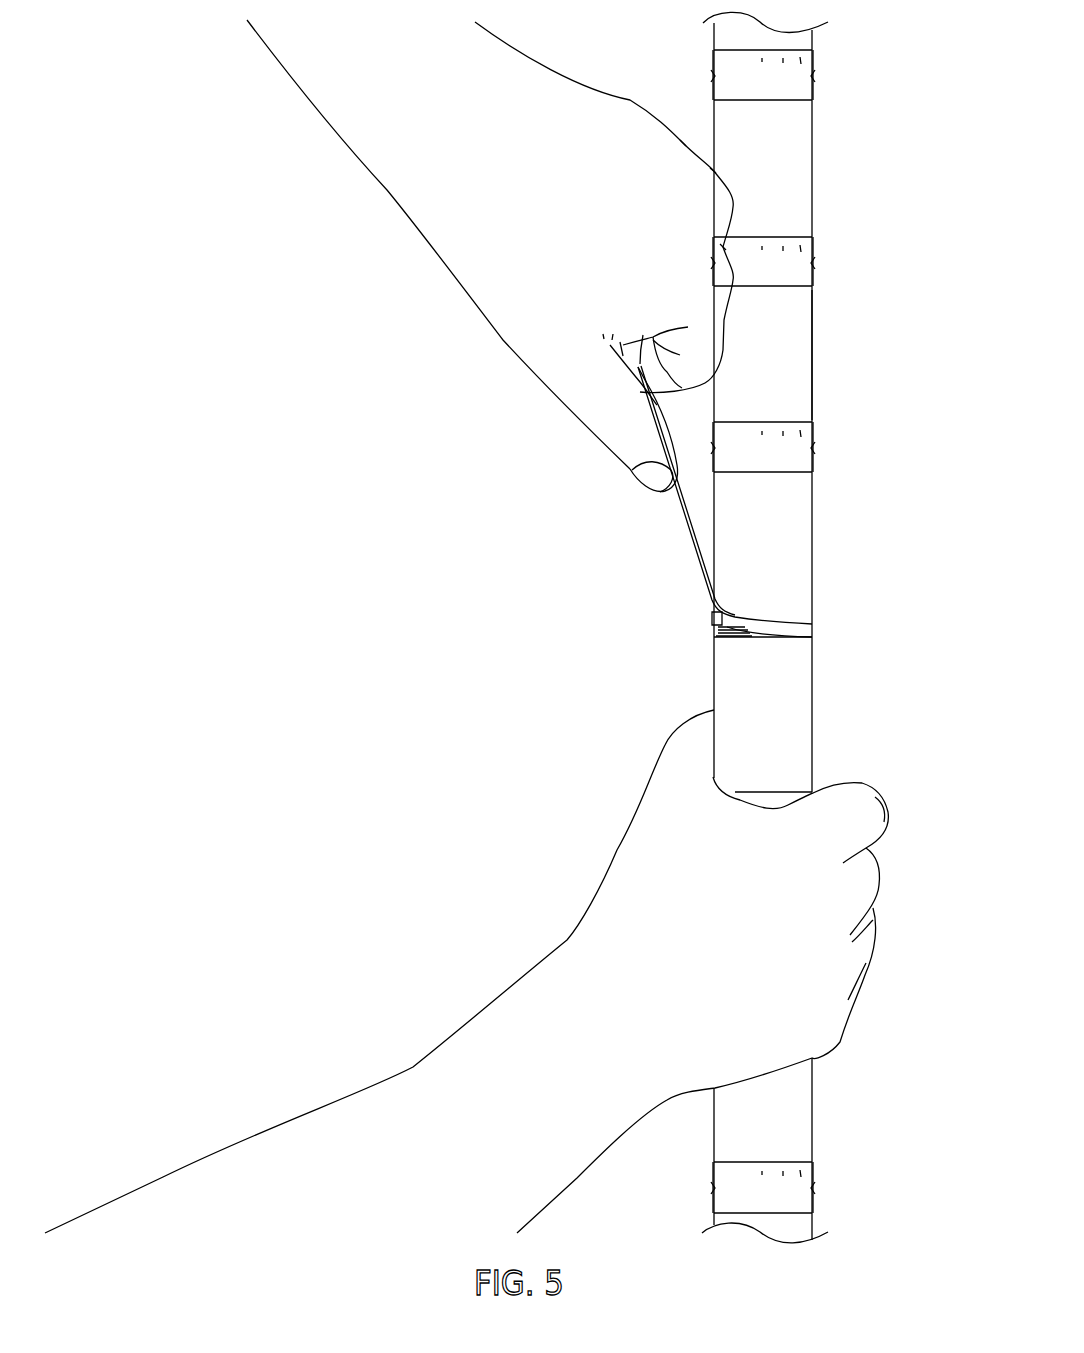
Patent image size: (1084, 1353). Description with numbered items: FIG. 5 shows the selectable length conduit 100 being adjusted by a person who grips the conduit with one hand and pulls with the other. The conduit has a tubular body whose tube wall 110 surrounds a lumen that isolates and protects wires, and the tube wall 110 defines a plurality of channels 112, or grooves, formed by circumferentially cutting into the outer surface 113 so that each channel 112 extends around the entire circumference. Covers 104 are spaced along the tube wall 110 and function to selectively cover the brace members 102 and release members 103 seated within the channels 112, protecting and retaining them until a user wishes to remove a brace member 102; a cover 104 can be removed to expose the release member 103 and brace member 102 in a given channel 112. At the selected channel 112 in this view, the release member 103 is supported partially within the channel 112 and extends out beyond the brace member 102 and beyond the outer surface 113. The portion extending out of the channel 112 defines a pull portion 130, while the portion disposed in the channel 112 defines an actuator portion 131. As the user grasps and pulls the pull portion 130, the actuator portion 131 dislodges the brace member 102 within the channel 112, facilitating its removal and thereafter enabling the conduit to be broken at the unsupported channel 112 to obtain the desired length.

The selectable length conduit 100 is at (832, 627).
The cover 104 is at (797, 265).
The tube wall 110 is at (800, 325).
The outer surface 113 is at (797, 385).
The release member 103 is at (707, 523).
The pull portion 130 is at (710, 561).
The brace member 102 is at (750, 615).
The channel 112 is at (706, 627).
The actuator portion 131 is at (738, 638).